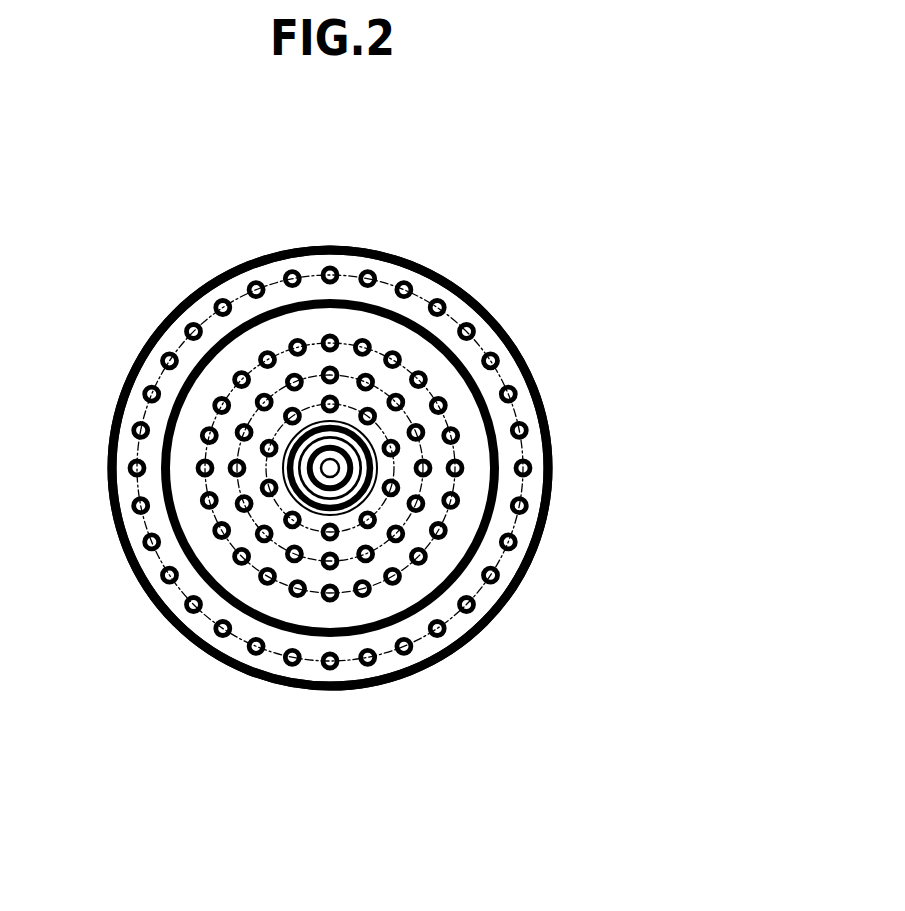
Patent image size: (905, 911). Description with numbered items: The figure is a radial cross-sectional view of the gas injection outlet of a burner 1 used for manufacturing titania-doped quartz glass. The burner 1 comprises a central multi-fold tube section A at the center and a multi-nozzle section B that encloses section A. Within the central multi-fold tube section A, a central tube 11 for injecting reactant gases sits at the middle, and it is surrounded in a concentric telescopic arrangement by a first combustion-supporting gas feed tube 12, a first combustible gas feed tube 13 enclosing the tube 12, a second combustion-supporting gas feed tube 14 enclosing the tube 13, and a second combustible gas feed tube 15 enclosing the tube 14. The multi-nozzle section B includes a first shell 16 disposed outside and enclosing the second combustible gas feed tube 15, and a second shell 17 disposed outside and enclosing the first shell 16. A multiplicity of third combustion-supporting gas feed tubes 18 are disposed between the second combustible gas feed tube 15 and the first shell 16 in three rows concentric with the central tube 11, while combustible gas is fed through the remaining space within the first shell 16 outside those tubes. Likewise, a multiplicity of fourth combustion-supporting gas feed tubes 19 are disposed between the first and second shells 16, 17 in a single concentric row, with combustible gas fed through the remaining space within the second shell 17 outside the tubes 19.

The burner 1 is at (509, 230).
The central tube 11 is at (327, 472).
The first combustion-supporting gas feed tube 12 is at (336, 484).
The first combustible gas feed tube 13 is at (347, 490).
The second combustion-supporting gas feed tube 14 is at (360, 490).
The second combustible gas feed tube 15 is at (374, 478).
The first shell 16 is at (497, 483).
The second shell 17 is at (543, 389).
The third combustion-supporting gas feed tubes 18 is at (213, 528).
The fourth combustion-supporting gas feed tubes 19 is at (161, 578).
The central multi-fold tube section A is at (345, 428).
The multi-nozzle section B is at (455, 382).